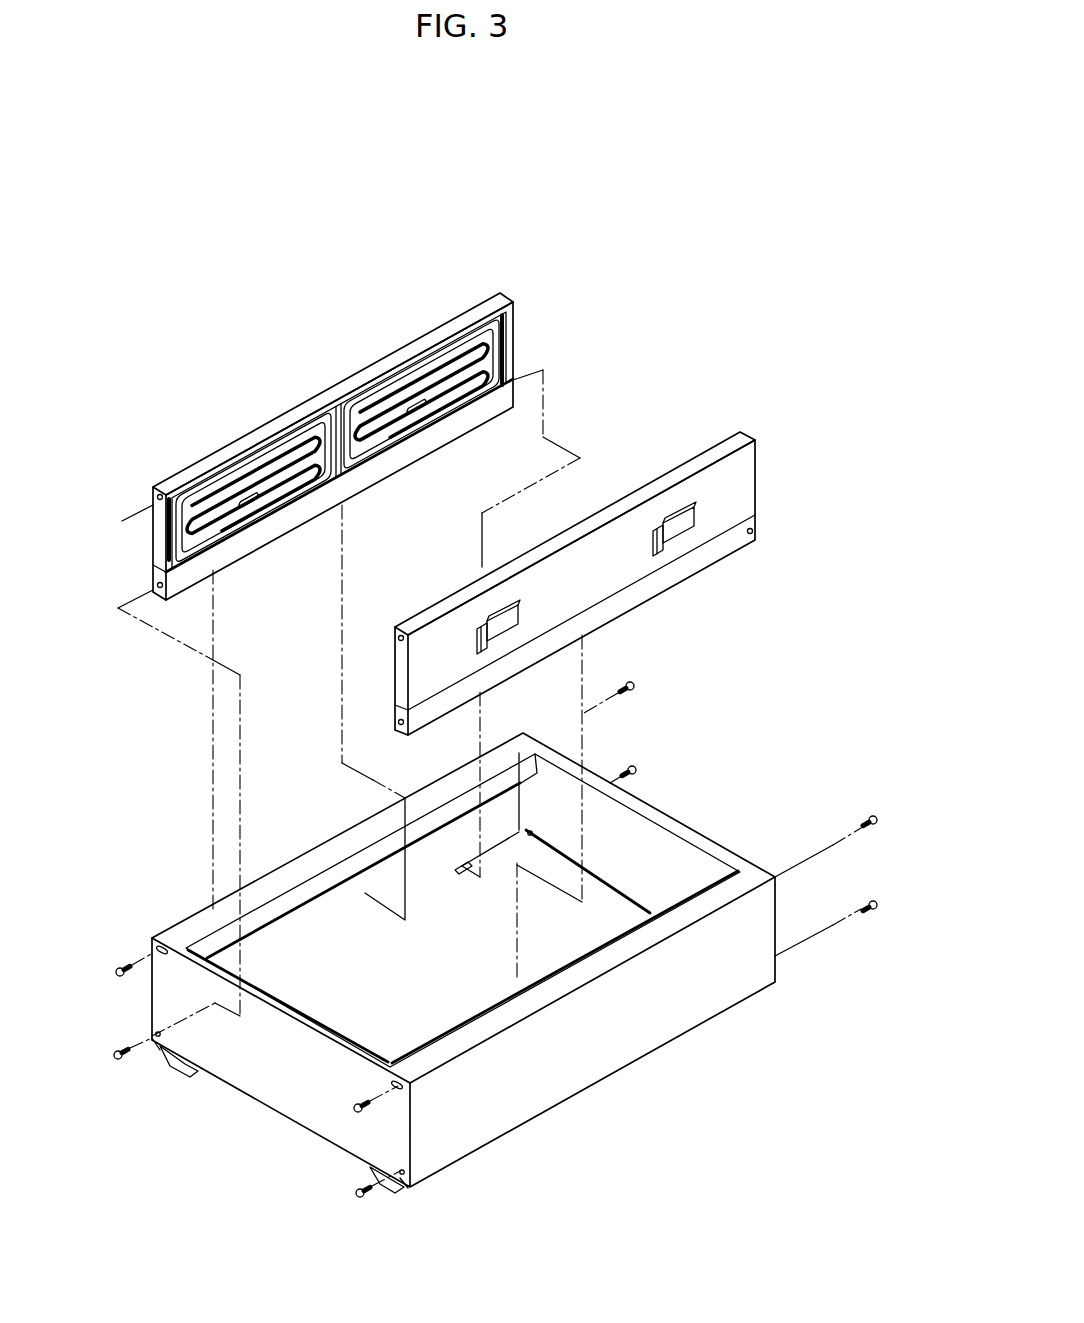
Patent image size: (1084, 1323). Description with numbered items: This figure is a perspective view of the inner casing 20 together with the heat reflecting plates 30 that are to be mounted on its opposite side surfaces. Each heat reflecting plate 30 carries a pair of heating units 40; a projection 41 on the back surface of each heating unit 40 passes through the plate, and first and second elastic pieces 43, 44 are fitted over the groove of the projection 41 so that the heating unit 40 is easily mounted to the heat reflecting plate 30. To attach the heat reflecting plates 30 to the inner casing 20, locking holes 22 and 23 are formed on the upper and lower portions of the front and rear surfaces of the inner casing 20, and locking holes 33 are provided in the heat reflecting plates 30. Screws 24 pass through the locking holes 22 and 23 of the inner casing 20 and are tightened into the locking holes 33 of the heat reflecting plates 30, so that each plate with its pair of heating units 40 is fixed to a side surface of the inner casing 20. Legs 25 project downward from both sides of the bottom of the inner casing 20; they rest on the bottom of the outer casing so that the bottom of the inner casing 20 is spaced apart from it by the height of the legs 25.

The inner casing 20 is at (582, 1048).
The locking hole 22 is at (153, 941).
The locking hole 23 is at (159, 1040).
The screw 24 is at (114, 975).
The leg 25 is at (185, 1073).
The heat reflecting plate 30 is at (318, 378).
The locking hole 33 is at (158, 496).
The heating unit 40 is at (422, 400).
The projection 41 is at (507, 632).
The first elastic piece 43 is at (478, 636).
The second elastic piece 44 is at (488, 615).